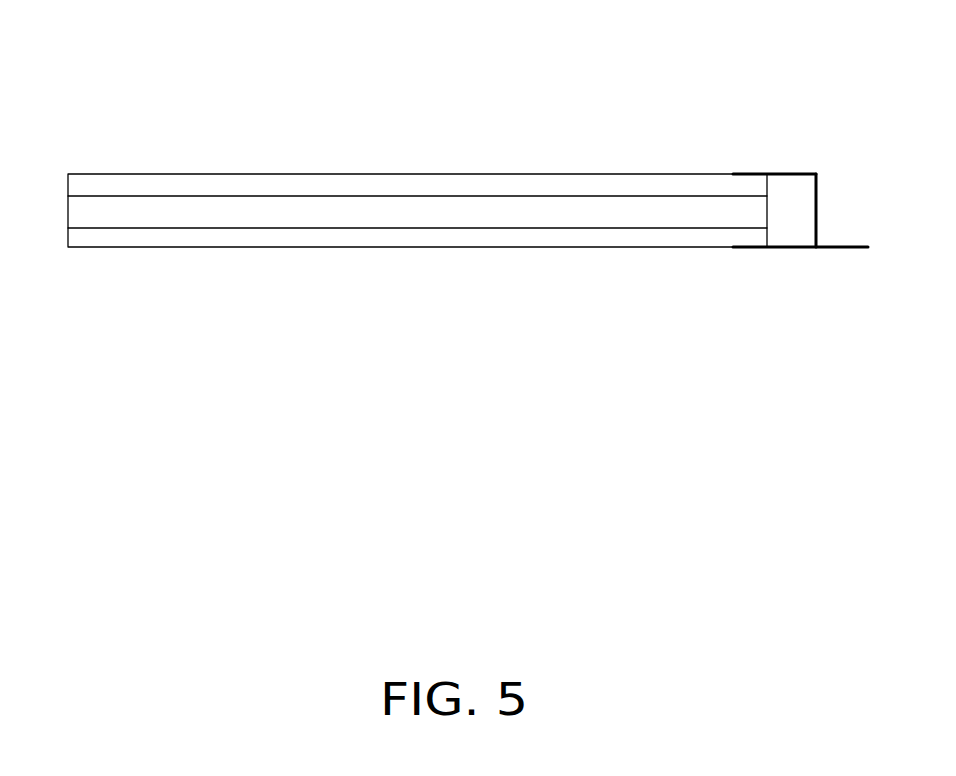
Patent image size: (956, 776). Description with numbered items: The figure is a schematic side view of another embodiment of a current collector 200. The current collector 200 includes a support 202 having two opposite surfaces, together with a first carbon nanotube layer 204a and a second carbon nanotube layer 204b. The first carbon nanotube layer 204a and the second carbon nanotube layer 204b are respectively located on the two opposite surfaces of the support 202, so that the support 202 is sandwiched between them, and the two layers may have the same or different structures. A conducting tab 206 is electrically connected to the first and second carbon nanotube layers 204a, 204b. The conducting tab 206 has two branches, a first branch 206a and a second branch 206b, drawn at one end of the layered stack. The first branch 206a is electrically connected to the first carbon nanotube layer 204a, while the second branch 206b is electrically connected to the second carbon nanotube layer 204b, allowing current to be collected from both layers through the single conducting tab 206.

The current collector 200 is at (435, 97).
The support 202 is at (210, 208).
The first carbon nanotube layer 204a is at (115, 182).
The second carbon nanotube layer 204b is at (138, 237).
The conducting tab 206 is at (848, 248).
The first branch 206a is at (817, 202).
The second branch 206b is at (792, 248).